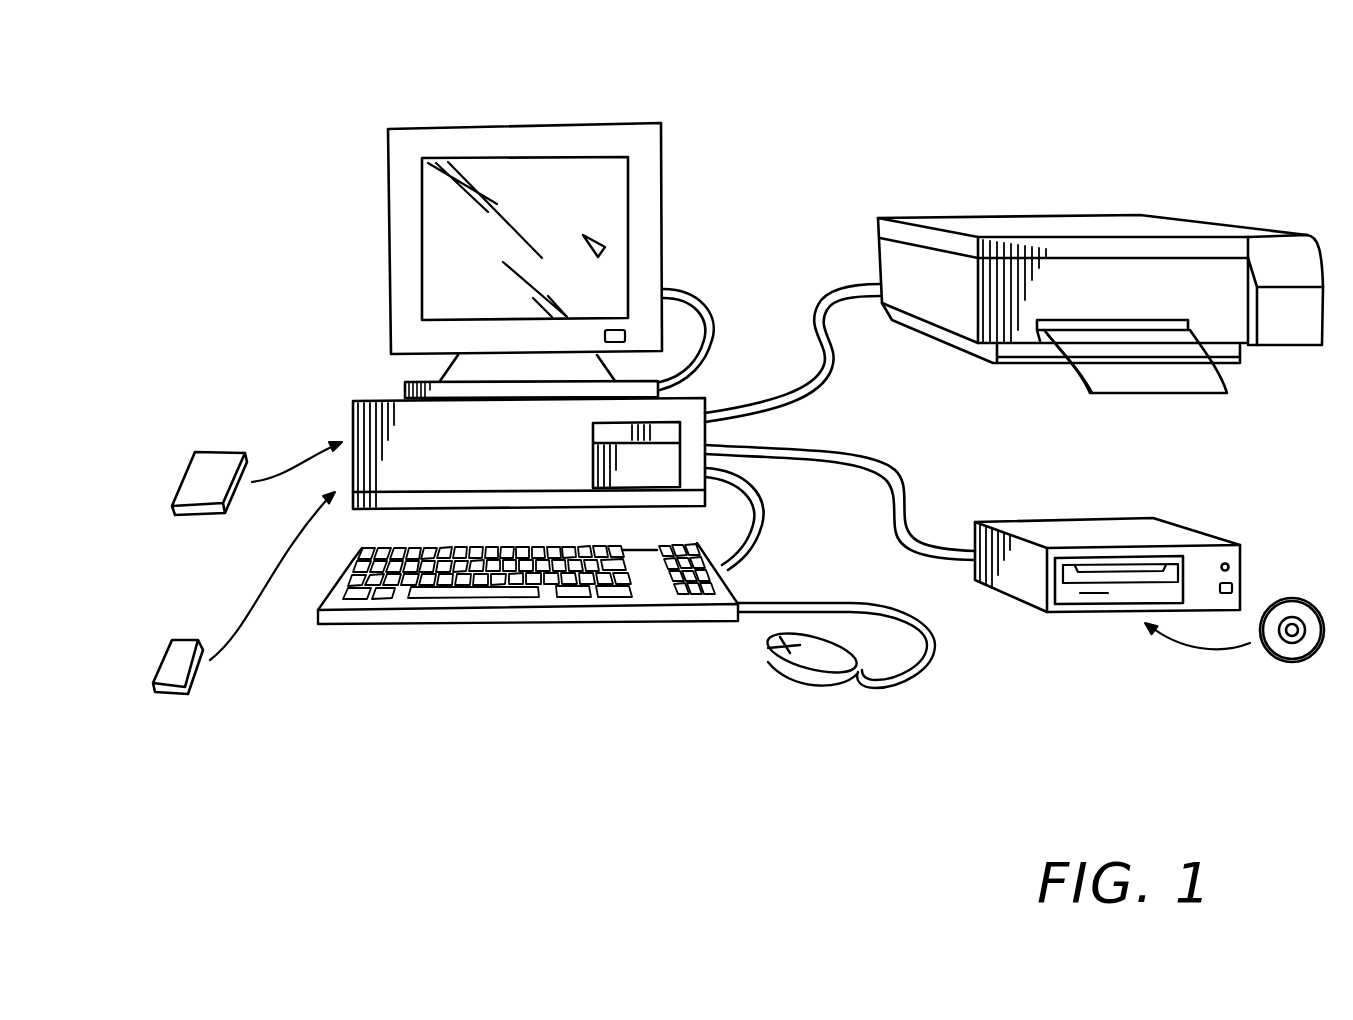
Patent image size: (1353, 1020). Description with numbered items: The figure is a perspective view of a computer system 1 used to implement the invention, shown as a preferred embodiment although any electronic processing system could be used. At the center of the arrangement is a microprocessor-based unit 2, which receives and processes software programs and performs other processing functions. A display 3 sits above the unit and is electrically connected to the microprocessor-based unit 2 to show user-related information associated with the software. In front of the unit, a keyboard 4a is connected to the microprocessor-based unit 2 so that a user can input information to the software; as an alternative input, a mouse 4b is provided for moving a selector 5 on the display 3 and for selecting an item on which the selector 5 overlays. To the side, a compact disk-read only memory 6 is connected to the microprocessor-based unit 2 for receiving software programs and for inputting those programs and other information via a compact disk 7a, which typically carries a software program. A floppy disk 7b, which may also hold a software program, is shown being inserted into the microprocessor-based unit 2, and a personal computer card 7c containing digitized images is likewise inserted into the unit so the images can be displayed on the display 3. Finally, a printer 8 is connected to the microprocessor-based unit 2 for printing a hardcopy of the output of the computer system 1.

The computer system 1 is at (793, 132).
The microprocessor-based unit 2 is at (370, 398).
The display 3 is at (551, 123).
The keyboard 4a is at (430, 627).
The mouse 4b is at (803, 676).
The selector 5 is at (605, 246).
The compact disk-read only memory (CD-ROM) 6 is at (1008, 520).
The compact disk 7a is at (1280, 650).
The floppy disk 7b is at (197, 515).
The personal computer card (PC card) 7c is at (163, 653).
The printer 8 is at (957, 216).